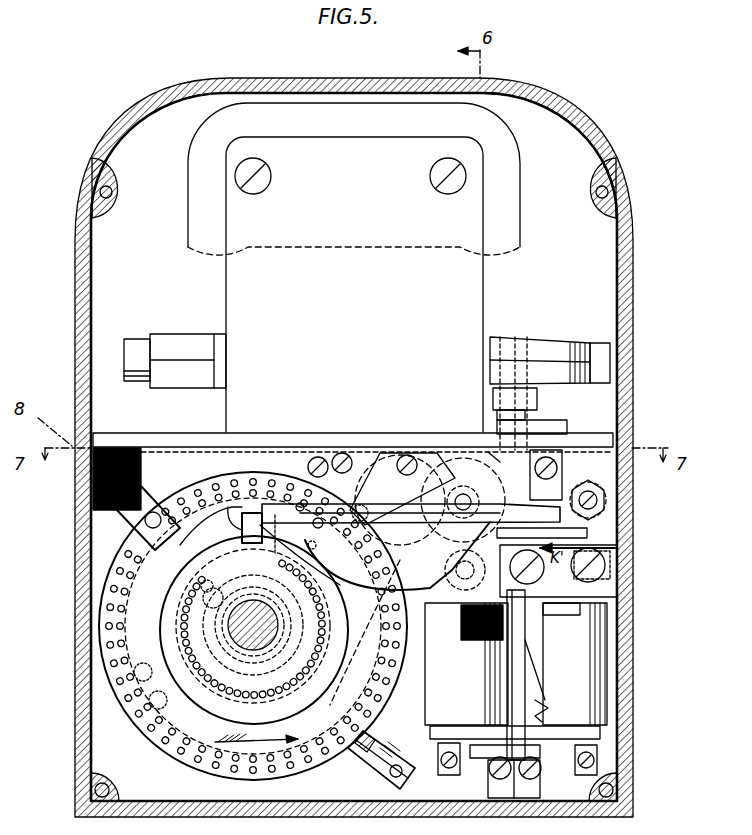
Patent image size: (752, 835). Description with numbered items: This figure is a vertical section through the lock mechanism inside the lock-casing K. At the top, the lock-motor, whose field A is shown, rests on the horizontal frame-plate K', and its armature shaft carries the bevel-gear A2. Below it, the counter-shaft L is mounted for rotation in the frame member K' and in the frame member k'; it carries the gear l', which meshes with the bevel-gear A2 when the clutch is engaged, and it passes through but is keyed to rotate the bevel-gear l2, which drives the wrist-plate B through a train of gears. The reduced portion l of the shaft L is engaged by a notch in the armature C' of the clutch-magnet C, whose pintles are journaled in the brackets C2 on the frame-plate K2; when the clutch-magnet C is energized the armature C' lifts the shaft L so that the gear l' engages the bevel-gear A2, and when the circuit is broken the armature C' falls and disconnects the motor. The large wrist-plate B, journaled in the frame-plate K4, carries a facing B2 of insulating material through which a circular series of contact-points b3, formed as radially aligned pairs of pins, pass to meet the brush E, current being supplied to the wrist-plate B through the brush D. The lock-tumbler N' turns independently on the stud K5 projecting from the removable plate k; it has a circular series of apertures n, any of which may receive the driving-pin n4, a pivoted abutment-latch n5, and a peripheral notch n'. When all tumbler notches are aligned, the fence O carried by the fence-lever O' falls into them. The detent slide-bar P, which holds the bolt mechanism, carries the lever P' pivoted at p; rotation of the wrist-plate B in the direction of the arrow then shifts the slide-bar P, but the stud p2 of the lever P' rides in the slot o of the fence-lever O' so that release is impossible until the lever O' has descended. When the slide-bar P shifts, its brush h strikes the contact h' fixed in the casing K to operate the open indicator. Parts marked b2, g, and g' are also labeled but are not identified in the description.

The field A is at (354, 267).
The bevel-gear A2 is at (530, 340).
The lock-casing K is at (369, 447).
The frame-plate K' is at (353, 430).
The frame-plate K2 is at (253, 626).
The frame-plate K4 is at (380, 458).
The stud K5 is at (228, 626).
The brush E is at (135, 525).
The fence O is at (221, 529).
The fence-lever O' is at (463, 500).
The detent slide-bar P is at (468, 561).
The lever P' is at (411, 518).
The brush D is at (402, 499).
The counter-shaft L is at (494, 463).
The lock-tumbler N' is at (254, 630).
The apertures n is at (253, 628).
The peripheral notch n' is at (283, 535).
The driving-pin n4 is at (207, 585).
The abutment-latch n5 is at (203, 596).
The slot o is at (308, 552).
The pin b2 is at (296, 505).
The contact-points b3 is at (140, 668).
The pivot p is at (545, 575).
The stud p2 is at (327, 528).
The plate k is at (467, 570).
The reduced portion l is at (495, 678).
The gear l' is at (530, 411).
The bevel-gear l2 is at (550, 533).
The clutch-magnet C is at (516, 671).
The armature C' is at (484, 747).
The brackets C2 is at (575, 775).
The brush h is at (543, 670).
The contact h' is at (548, 699).
The frame member k' is at (500, 778).
The wrist-plate B is at (362, 768).
The facing B2 is at (365, 632).
The pivot g is at (375, 733).
The pivot screw g' is at (378, 782).